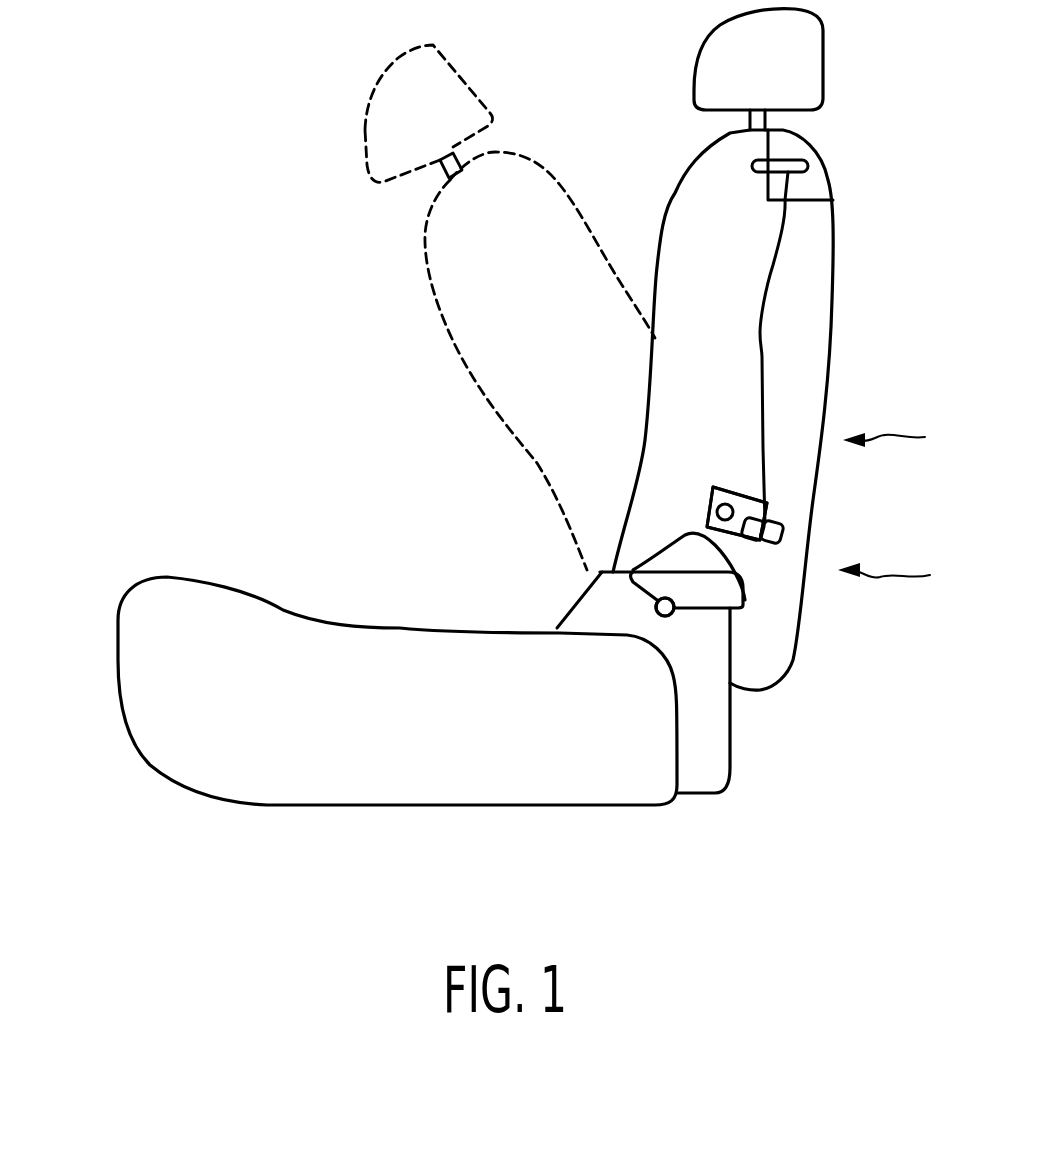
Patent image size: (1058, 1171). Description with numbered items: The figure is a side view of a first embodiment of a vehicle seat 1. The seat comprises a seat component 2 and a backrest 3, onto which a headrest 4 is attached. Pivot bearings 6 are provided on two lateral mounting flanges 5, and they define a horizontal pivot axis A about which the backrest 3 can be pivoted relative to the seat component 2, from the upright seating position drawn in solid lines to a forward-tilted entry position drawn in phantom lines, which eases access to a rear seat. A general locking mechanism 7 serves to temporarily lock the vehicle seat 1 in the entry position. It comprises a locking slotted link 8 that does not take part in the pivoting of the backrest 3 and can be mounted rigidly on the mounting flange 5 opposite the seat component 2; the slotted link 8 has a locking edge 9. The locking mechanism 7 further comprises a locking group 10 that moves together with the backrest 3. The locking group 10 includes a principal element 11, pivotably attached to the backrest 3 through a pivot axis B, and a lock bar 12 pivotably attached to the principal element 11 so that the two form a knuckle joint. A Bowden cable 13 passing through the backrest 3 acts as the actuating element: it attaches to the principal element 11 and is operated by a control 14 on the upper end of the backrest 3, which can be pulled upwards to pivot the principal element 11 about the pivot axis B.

The vehicle seat 1 is at (140, 142).
The seat component 2 is at (130, 703).
The backrest 3 is at (817, 267).
The headrest 4 is at (810, 42).
The lateral mounting flange 5 is at (708, 767).
The pivot bearing 6 is at (672, 617).
The pivot axis A is at (665, 607).
The locking mechanism 7 is at (897, 577).
The locking slotted link 8 is at (745, 600).
The locking edge 9 is at (680, 552).
The locking group 10 is at (909, 437).
The principal element 11 is at (717, 487).
The lock bar 12 is at (780, 530).
The Bowden cable 13 is at (762, 357).
The control 14 is at (797, 160).
The pivot axis B is at (707, 522).